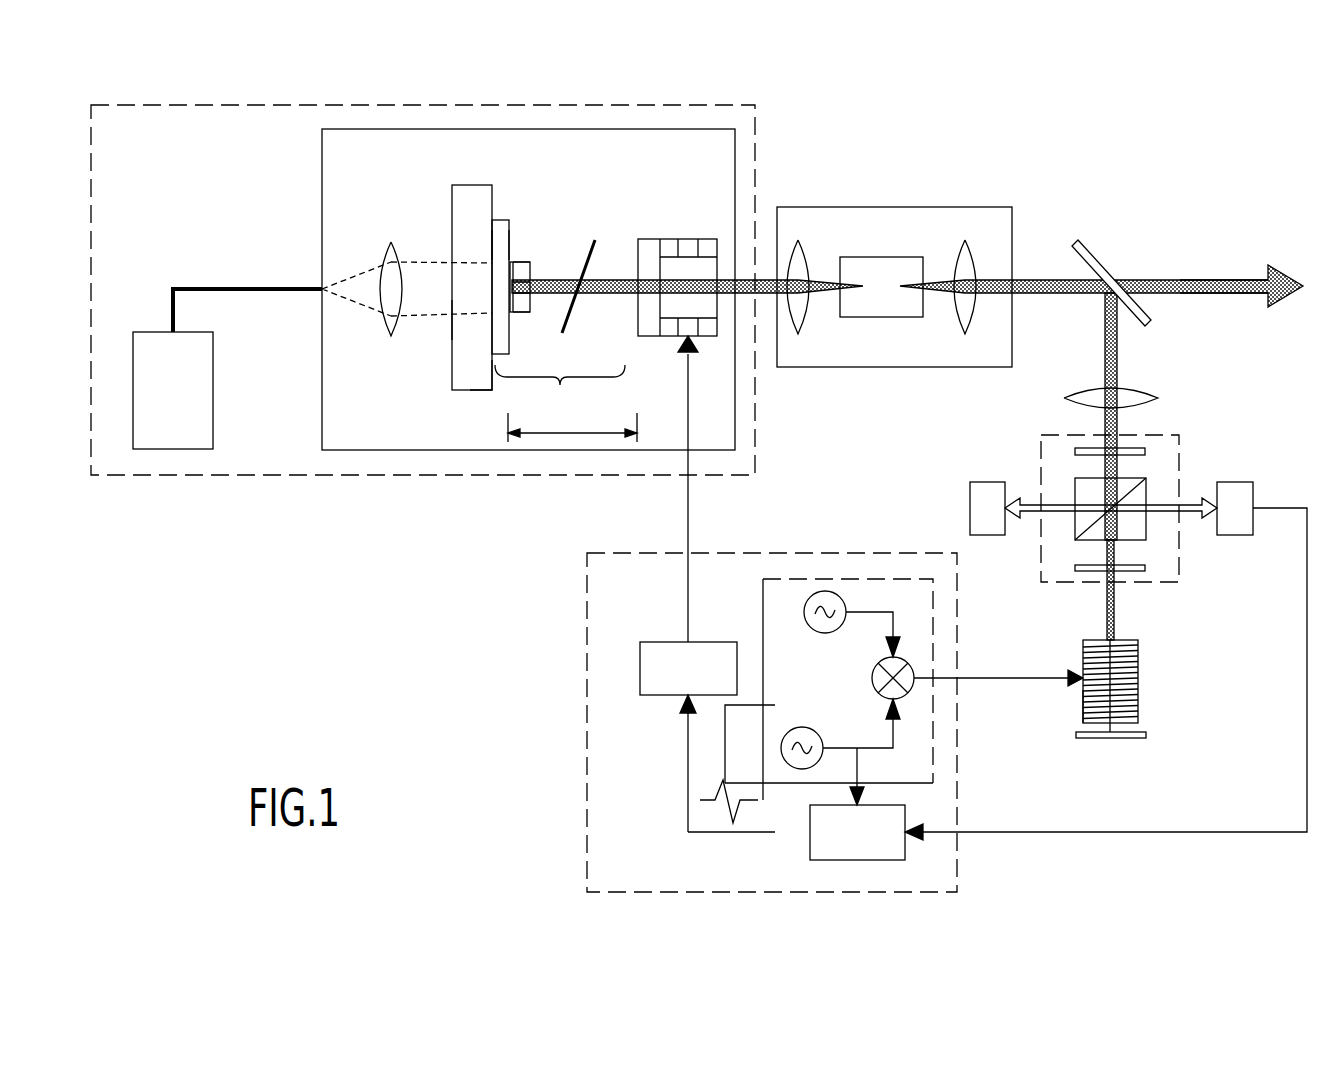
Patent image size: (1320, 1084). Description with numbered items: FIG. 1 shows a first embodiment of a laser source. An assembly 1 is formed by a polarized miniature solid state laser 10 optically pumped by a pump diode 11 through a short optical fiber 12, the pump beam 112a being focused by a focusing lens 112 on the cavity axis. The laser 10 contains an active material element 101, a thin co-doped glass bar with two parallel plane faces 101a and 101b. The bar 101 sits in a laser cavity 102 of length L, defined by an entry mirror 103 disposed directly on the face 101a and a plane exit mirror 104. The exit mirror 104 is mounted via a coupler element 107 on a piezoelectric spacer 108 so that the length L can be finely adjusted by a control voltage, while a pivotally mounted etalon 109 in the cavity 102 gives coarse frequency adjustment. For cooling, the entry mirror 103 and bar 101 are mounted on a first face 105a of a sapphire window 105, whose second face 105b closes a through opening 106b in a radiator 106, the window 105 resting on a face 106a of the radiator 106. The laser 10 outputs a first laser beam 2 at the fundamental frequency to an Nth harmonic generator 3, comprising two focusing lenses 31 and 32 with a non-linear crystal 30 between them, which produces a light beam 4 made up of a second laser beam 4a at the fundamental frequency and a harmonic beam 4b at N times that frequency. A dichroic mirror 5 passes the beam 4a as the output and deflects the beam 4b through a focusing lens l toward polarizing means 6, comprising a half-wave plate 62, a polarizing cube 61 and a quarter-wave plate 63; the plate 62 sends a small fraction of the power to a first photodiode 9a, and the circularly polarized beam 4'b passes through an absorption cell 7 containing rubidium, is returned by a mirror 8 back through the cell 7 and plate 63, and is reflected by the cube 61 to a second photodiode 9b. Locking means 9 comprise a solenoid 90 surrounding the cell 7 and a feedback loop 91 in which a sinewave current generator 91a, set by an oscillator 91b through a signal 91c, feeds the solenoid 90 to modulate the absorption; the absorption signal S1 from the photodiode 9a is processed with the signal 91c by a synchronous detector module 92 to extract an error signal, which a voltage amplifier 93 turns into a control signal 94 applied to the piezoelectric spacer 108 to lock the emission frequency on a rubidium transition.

The assembly 1 is at (253, 478).
The polarized miniature laser 10 is at (335, 387).
The pump diode 11 is at (200, 410).
The short optical fiber 12 is at (258, 288).
The focusing lens 112 is at (382, 297).
The pump beam 112a is at (368, 272).
The radiator 106 is at (473, 202).
The face of the radiator 106a is at (493, 377).
The through opening 106b is at (477, 313).
The sapphire window 105 is at (502, 230).
The first face of the sapphire window 105a is at (490, 240).
The second face of the window 105b is at (515, 230).
The active material element 101 is at (513, 268).
The plane face of the bar 101a is at (517, 267).
The plane face of the bar 101b is at (534, 297).
The entry mirror 103 is at (528, 315).
The laser cavity 102 is at (560, 387).
The length of the cavity L is at (572, 426).
The exit mirror 104 is at (638, 250).
The coupler element 107 is at (647, 323).
The piezoelectric spacer 108 is at (707, 250).
The etalon 109 is at (595, 240).
The first laser beam 2 is at (745, 282).
The Nth harmonic generator 3 is at (938, 352).
The non-linear crystal 30 is at (905, 263).
The focusing lens 31 is at (795, 263).
The focusing lens 32 is at (967, 260).
The light beam 4 is at (1063, 311).
The second laser beam 4a is at (1190, 278).
The second laser beam (Nth harmonic) 4b is at (1110, 325).
The circularly polarized beam 4'b is at (1142, 636).
The dichroic mirror 5 is at (1108, 265).
The focusing lens l is at (1125, 393).
The laser beam polarizing means 6 is at (1179, 573).
The polarizing cube 61 is at (1138, 522).
The half-wave plate 62 is at (1125, 452).
The quarter-wave plate 63 is at (1070, 568).
The first photodiode 9a is at (1233, 527).
The second photodiode 9b is at (995, 528).
The absorption cell 7 is at (1138, 673).
The mirror 8 is at (1120, 735).
The solenoid 90 is at (1093, 698).
The locking means 9 is at (587, 815).
The modulation signal generator 91 is at (992, 707).
The sinewave current generator 91a is at (852, 627).
The oscillator 91b is at (840, 734).
The signal 91c is at (878, 776).
The synchronous detector module 92 is at (820, 847).
The voltage amplifier 93 is at (700, 648).
The control signal 94 is at (688, 535).
The absorption signal S1 is at (1012, 830).